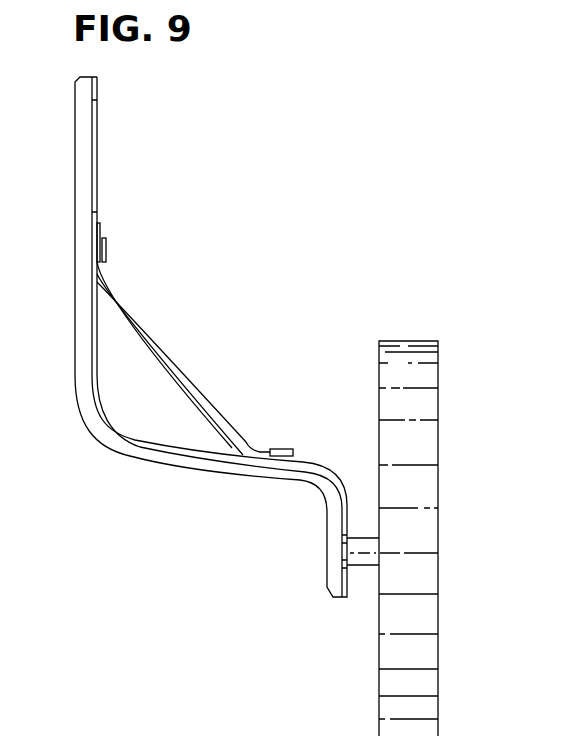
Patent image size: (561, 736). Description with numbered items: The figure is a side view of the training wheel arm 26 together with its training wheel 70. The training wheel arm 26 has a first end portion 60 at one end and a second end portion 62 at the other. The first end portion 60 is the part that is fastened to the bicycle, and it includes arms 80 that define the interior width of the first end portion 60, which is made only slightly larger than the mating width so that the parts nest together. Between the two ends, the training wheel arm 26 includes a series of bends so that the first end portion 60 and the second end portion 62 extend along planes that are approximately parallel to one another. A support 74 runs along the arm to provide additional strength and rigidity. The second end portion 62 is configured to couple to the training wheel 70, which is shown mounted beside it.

The first end portion 60 is at (188, 337).
The arms 80 is at (85, 106).
The training wheel arm 26 is at (82, 423).
The support 74 is at (190, 363).
The second end portion 62 is at (325, 523).
The training wheel 70 is at (440, 443).